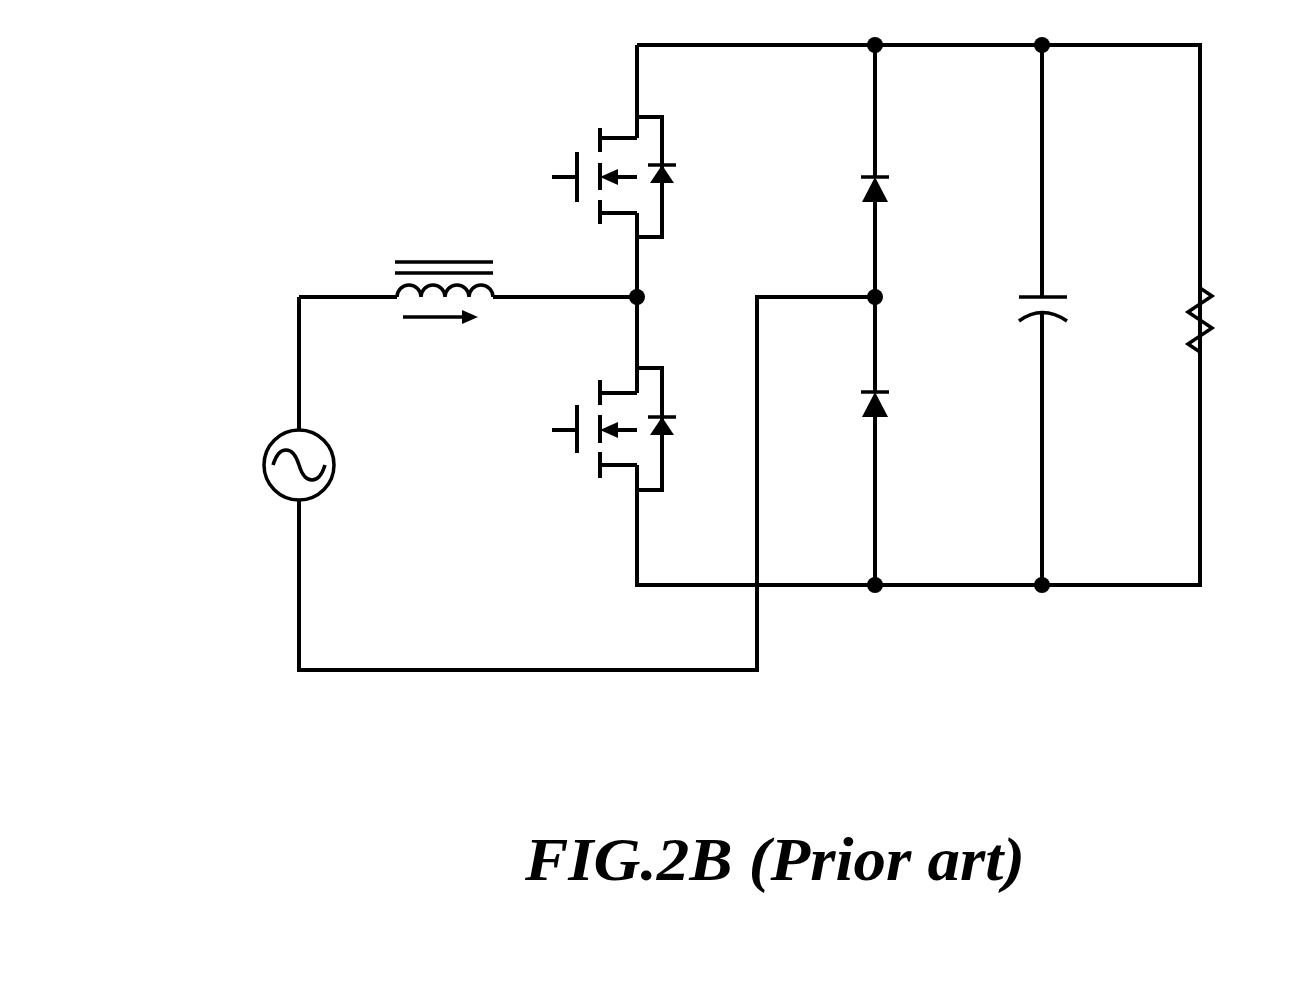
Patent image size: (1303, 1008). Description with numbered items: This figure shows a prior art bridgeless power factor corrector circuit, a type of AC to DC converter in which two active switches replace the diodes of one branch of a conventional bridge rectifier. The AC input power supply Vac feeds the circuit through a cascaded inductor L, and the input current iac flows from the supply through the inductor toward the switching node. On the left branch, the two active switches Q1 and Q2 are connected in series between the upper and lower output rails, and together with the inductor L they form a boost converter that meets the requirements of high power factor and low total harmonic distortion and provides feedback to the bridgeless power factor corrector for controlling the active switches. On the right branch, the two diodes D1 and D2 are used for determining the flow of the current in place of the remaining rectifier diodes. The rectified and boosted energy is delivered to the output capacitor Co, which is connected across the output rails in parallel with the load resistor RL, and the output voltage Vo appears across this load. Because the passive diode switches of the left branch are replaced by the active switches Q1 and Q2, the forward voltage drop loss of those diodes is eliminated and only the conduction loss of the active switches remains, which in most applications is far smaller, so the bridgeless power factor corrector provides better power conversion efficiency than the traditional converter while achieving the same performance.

The AC input voltage source Vac is at (257, 465).
The boost inductor L is at (444, 253).
The AC input current iac is at (440, 342).
The first switch (MOSFET) Q1 is at (587, 172).
The second switch (MOSFET) Q2 is at (597, 424).
The first diode D1 is at (828, 185).
The second diode D2 is at (843, 418).
The output capacitor Co is at (1014, 319).
The load resistor RL is at (1158, 320).
The output voltage Vo is at (1239, 322).